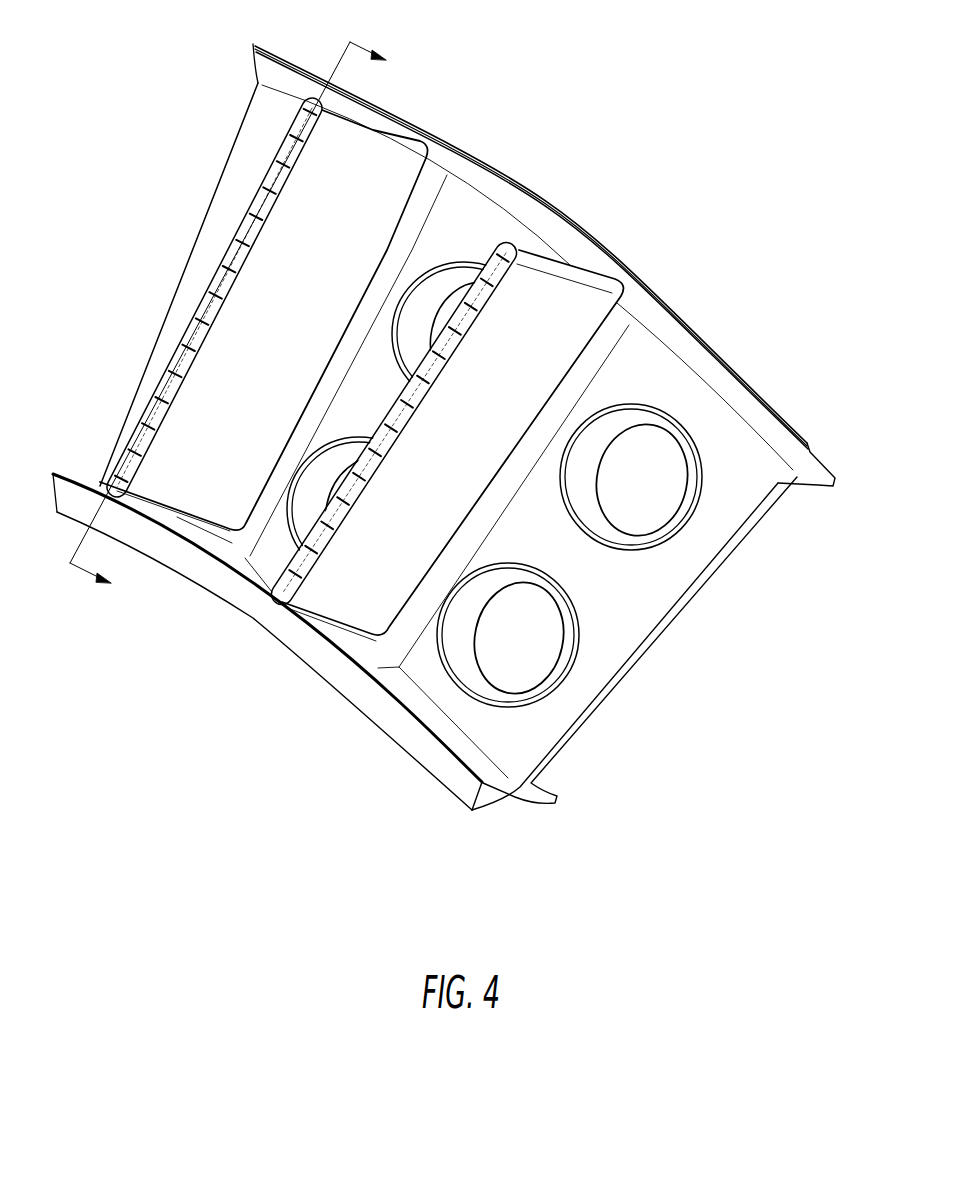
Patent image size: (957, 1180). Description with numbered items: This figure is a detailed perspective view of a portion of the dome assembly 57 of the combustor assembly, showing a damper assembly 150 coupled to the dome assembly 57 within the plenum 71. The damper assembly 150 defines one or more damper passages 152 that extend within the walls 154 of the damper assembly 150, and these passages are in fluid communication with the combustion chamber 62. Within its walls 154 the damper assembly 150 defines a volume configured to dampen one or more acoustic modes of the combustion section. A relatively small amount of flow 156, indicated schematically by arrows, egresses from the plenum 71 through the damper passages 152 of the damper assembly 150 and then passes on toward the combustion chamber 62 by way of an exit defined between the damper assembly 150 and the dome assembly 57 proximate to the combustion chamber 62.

The dome assembly 57 is at (443, 233).
The combustion chamber 62 is at (872, 399).
The plenum 71 is at (136, 629).
The damper assembly 150 is at (350, 163).
The damper passages 152 is at (275, 600).
The walls 154 is at (333, 670).
The flow 156 is at (303, 568).